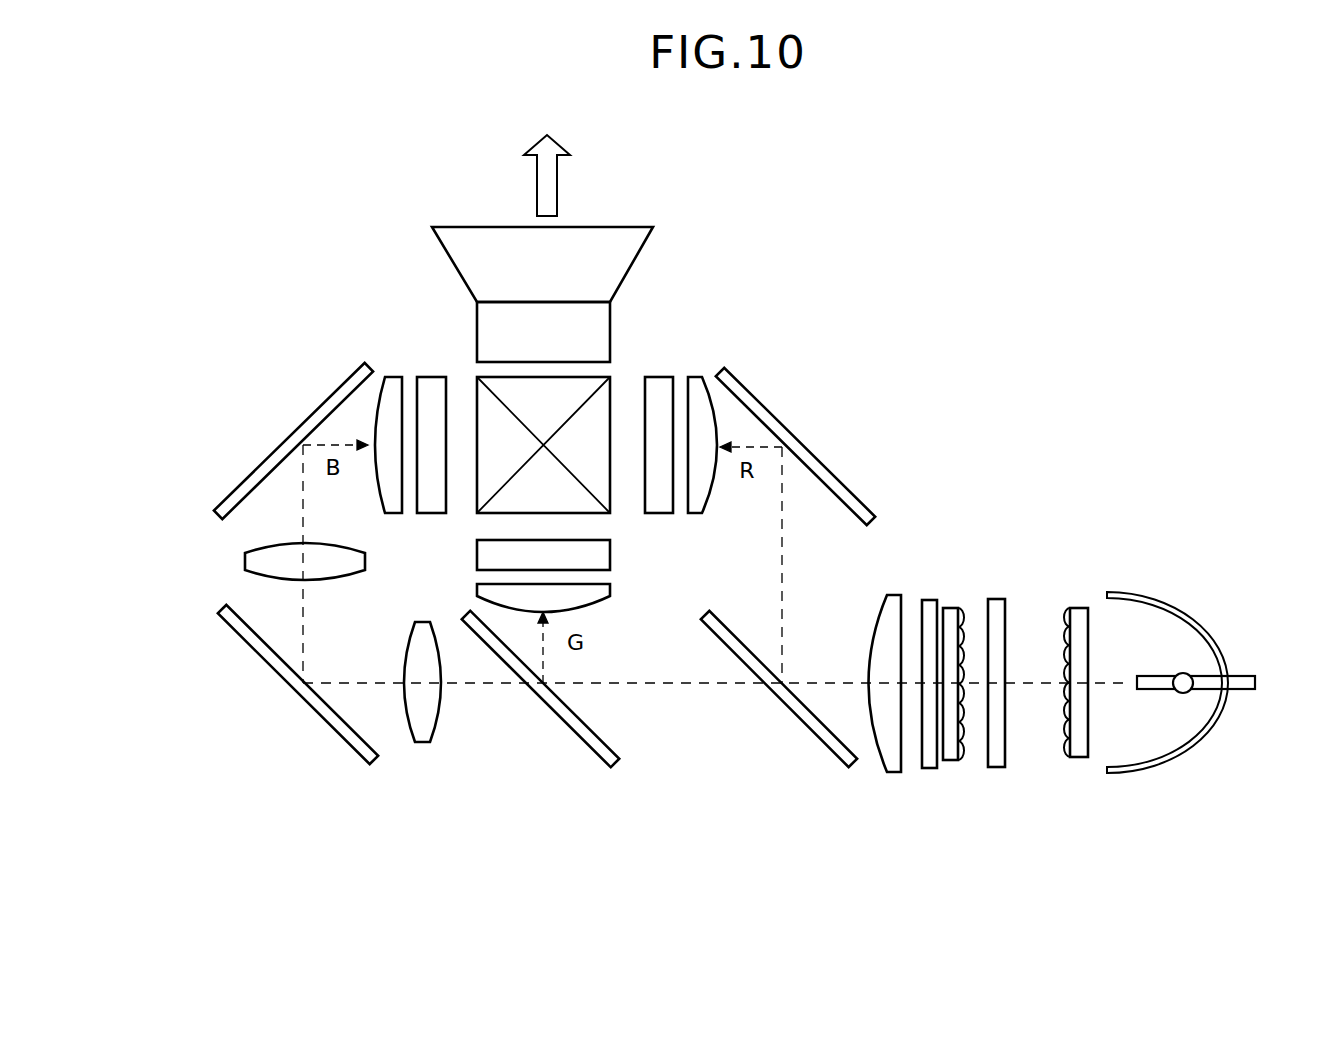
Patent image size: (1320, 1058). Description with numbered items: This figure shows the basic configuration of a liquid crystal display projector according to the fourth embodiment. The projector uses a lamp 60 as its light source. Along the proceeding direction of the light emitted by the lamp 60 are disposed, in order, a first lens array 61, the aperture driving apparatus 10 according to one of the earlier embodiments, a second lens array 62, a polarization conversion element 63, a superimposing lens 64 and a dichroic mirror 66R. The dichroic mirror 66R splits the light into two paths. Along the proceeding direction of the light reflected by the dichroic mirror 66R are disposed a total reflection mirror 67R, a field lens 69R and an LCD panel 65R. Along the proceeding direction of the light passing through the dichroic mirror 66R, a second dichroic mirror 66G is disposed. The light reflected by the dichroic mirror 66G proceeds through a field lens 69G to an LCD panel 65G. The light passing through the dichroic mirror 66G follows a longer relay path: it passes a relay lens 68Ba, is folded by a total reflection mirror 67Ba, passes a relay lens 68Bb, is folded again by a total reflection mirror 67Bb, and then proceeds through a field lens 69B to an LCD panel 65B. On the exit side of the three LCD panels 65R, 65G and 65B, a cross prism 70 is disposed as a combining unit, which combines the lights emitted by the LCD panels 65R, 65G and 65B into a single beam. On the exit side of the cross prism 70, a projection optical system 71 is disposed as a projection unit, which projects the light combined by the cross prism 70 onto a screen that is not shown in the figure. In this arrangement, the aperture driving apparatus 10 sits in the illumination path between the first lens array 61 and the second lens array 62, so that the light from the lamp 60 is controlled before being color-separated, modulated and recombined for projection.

The aperture driving apparatus 10 is at (996, 770).
The lamp 60 is at (1173, 758).
The first lens array 61 is at (1078, 760).
The second lens array 62 is at (950, 765).
The polarization conversion element 63 is at (928, 770).
The superimposing lens 64 is at (880, 760).
The LCD panel 65B is at (432, 377).
The LCD panel 65G is at (610, 555).
The LCD panel 65R is at (660, 377).
The dichroic mirror 66G is at (552, 713).
The dichroic mirror 66R is at (783, 705).
The total reflection mirror 67Ba is at (315, 717).
The total reflection mirror 67Bb is at (258, 462).
The total reflection mirror 67R is at (780, 418).
The relay lens 68Ba is at (410, 728).
The relay lens 68Bb is at (245, 562).
The field lens 69B is at (392, 377).
The field lens 69G is at (610, 590).
The field lens 69R is at (696, 377).
The cross prism 70 is at (617, 385).
The projection optical system 71 is at (480, 227).